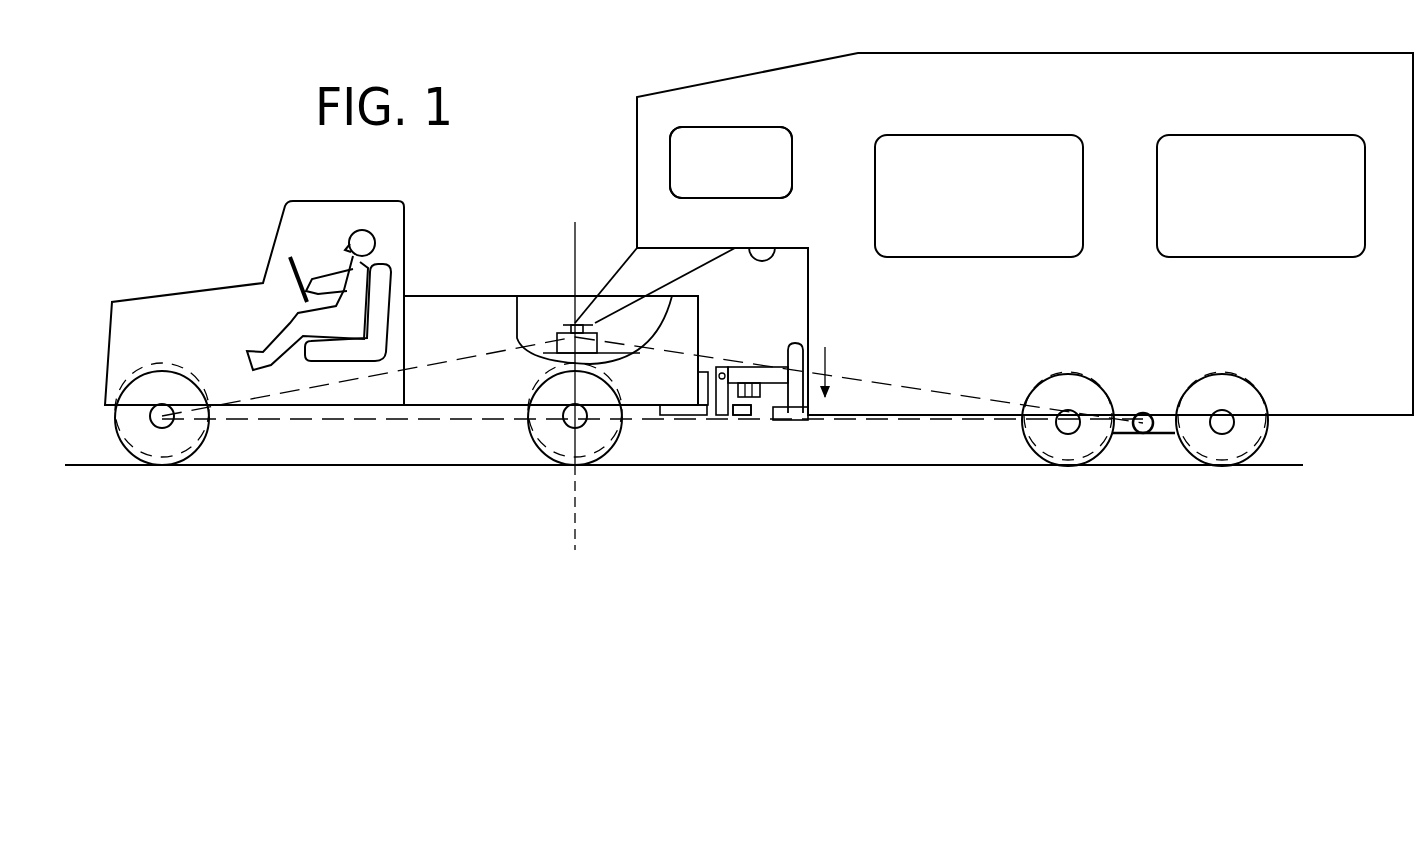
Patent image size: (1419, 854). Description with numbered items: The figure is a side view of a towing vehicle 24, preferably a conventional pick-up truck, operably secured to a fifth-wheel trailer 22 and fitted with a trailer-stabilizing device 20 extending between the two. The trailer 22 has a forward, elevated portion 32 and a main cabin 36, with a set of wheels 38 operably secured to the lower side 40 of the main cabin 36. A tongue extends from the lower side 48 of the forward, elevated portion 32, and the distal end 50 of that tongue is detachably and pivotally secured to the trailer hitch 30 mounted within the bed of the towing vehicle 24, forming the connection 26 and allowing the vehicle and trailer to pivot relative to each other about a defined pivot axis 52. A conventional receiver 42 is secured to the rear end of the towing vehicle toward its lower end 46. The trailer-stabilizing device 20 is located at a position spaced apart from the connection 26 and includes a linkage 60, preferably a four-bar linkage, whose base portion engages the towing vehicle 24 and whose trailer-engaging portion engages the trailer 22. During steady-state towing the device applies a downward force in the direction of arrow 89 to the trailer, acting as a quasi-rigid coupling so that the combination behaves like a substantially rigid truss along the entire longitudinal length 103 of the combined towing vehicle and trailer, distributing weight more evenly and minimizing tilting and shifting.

The trailer-stabilizing device 20 is at (790, 330).
The fifth-wheel trailer 22 is at (1265, 83).
The towing vehicle 24 is at (391, 232).
The connection 26 is at (545, 308).
The trailer hitch 30 is at (613, 329).
The forward, elevated portion 32 is at (803, 122).
The main cabin 36 is at (1112, 353).
The wheels 38 is at (1107, 443).
The lower side 40 is at (1362, 415).
The receiver 42 is at (688, 420).
The lower end 46 is at (643, 410).
The lower side 48 is at (772, 248).
The distal end 50 is at (571, 328).
The pivot axis 52 is at (573, 255).
The linkage 60 is at (742, 420).
The arrow 89 is at (826, 368).
The longitudinal length 103 is at (443, 420).